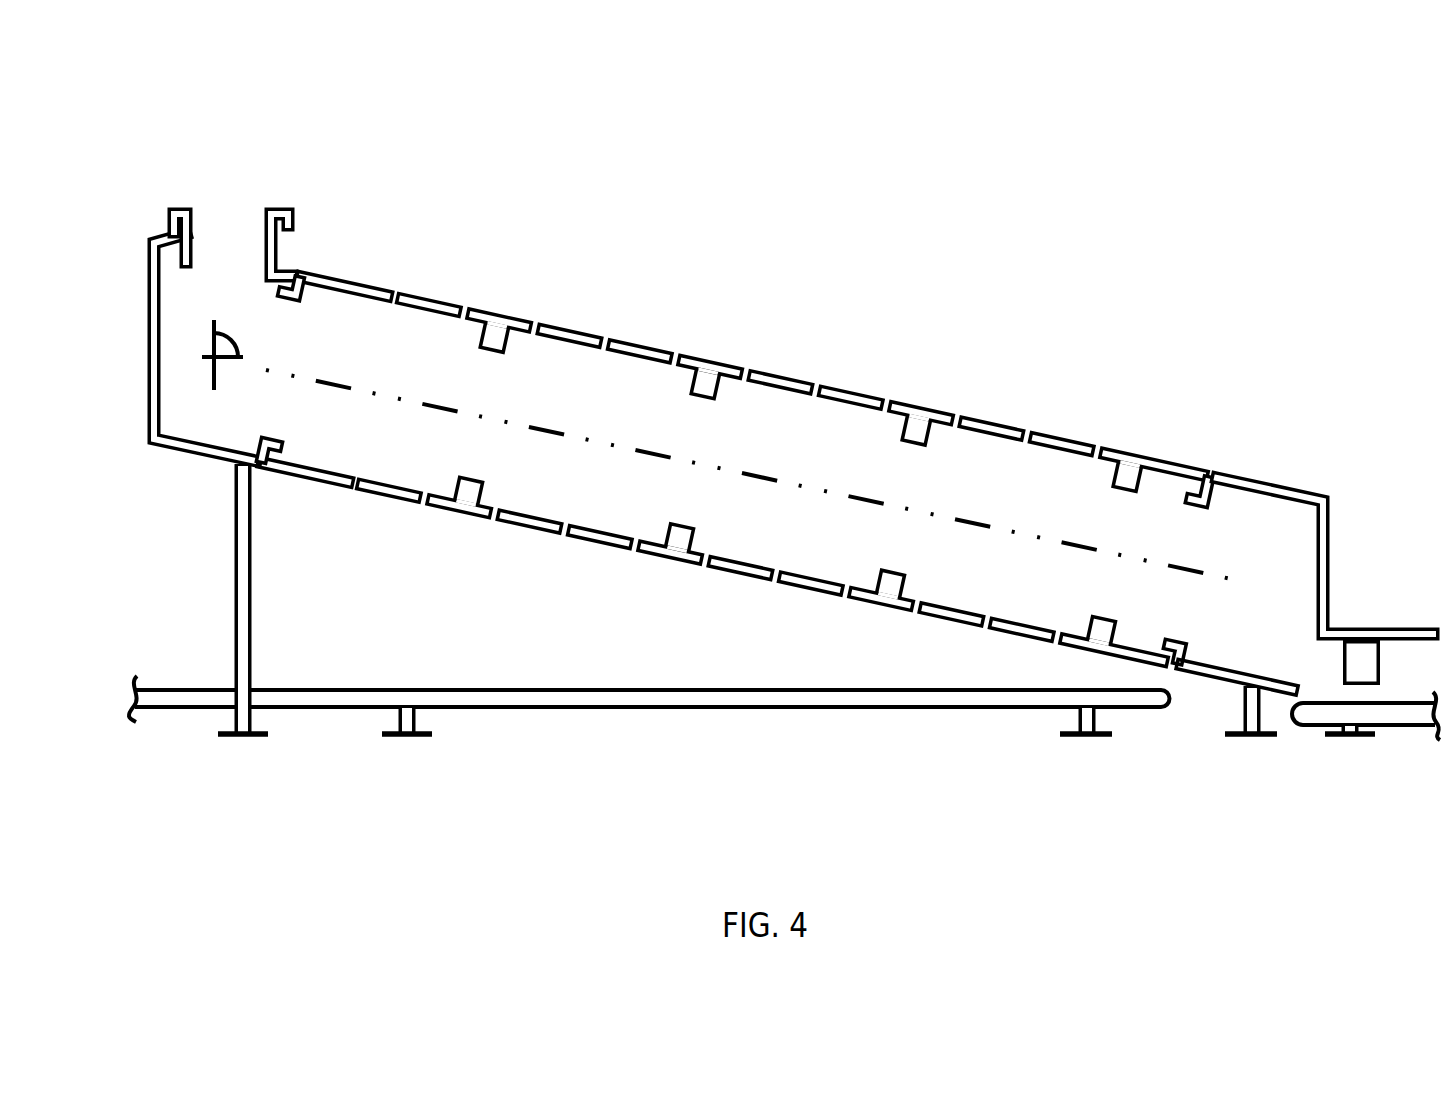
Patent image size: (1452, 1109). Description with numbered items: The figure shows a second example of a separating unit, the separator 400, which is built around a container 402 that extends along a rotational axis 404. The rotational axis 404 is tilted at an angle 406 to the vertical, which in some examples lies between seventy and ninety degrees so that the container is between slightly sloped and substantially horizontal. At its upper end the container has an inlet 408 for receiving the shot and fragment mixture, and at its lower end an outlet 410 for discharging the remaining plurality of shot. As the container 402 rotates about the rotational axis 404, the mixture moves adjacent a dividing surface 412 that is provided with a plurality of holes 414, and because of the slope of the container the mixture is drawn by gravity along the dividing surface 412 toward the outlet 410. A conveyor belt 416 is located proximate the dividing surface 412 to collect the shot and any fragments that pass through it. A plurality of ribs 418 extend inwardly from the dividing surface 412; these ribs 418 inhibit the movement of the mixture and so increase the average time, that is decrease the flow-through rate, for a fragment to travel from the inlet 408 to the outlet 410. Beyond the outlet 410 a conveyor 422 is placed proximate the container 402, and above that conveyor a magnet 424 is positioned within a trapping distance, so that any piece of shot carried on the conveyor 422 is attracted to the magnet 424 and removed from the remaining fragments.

The separator 400 is at (262, 94).
The container 402 is at (857, 412).
The rotational axis 404 is at (452, 415).
The angle 406 is at (232, 343).
The inlet 408 is at (232, 197).
The outlet 410 is at (1279, 641).
The dividing surface 412 is at (604, 343).
The holes 414 is at (742, 386).
The conveyor belt 416 is at (500, 690).
The ribs 418 is at (881, 443).
The conveyor 422 is at (1396, 728).
The magnet 424 is at (1362, 662).